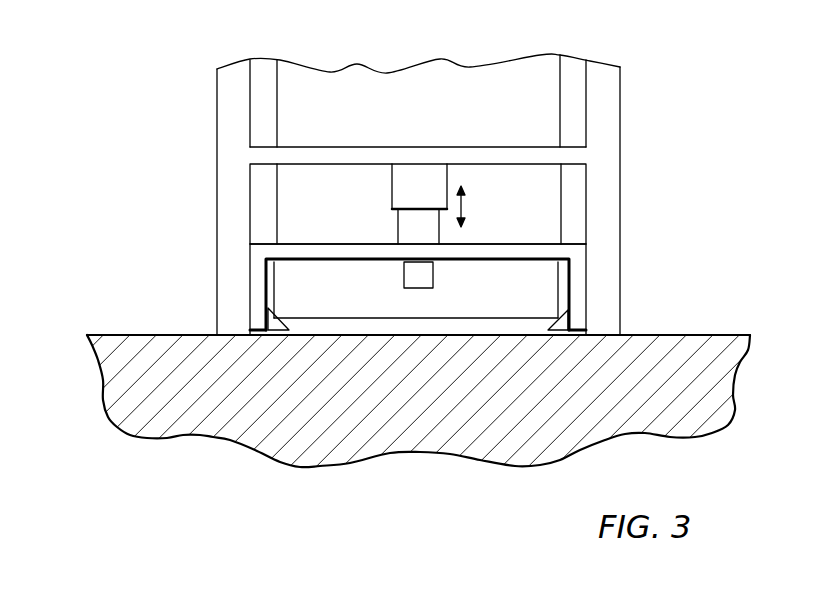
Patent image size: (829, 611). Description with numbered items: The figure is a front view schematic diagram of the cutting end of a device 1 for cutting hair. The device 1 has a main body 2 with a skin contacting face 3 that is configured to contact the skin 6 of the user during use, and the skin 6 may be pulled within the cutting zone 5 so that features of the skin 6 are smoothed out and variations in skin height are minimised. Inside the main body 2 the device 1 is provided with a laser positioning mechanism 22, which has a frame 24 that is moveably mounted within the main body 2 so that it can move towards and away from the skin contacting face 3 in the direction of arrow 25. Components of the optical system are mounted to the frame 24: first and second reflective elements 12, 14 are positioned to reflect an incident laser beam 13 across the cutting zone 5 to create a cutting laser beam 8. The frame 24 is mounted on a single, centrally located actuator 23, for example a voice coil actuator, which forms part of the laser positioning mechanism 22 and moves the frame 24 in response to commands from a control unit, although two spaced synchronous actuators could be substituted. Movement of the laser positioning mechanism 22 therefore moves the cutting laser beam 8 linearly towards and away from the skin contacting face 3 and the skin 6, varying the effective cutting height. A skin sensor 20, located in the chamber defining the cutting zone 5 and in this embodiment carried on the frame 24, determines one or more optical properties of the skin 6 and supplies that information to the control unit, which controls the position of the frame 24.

The device 1 is at (676, 33).
The main body 2 is at (612, 126).
The skin contacting face 3 is at (603, 337).
The cutting zone 5 is at (346, 317).
The skin 6 is at (627, 422).
The cutting laser beam 8 is at (496, 318).
The first reflective element 12 is at (276, 333).
The incident laser beam 13 is at (278, 218).
The second reflective element 14 is at (562, 333).
The skin sensor 20 is at (411, 282).
The laser positioning mechanism 22 is at (578, 295).
The actuator 23 is at (391, 193).
The frame 24 is at (578, 257).
The arrow 25 is at (466, 204).